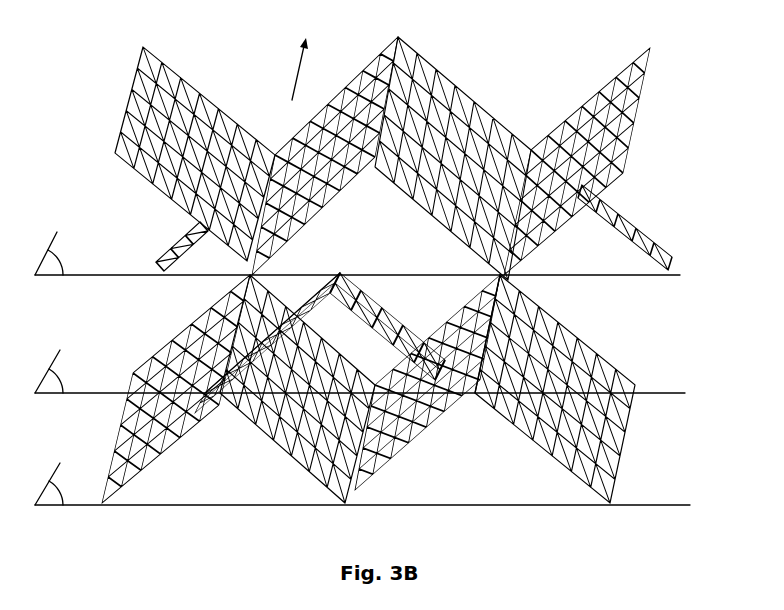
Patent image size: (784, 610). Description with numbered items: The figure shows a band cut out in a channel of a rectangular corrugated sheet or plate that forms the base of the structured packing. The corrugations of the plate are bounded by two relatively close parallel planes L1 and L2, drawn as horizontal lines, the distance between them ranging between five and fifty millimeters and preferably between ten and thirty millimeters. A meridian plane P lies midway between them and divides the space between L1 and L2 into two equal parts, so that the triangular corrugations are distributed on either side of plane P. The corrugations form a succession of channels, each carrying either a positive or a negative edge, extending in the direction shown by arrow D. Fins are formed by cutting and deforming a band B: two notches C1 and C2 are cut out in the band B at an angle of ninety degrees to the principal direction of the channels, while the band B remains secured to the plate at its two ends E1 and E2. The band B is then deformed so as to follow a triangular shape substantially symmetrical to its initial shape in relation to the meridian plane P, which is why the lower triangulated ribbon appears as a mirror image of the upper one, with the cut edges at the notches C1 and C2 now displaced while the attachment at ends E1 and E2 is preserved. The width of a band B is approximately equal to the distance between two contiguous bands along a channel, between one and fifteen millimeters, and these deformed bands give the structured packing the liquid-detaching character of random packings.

The notch C1 is at (318, 208).
The notch C2 is at (394, 318).
The band B is at (296, 406).
The end E1 is at (236, 351).
The end E2 is at (515, 425).
The parallel plane L1 is at (362, 484).
The parallel plane L2 is at (357, 253).
The meridian plane P is at (360, 371).
The direction of the channels D is at (292, 69).